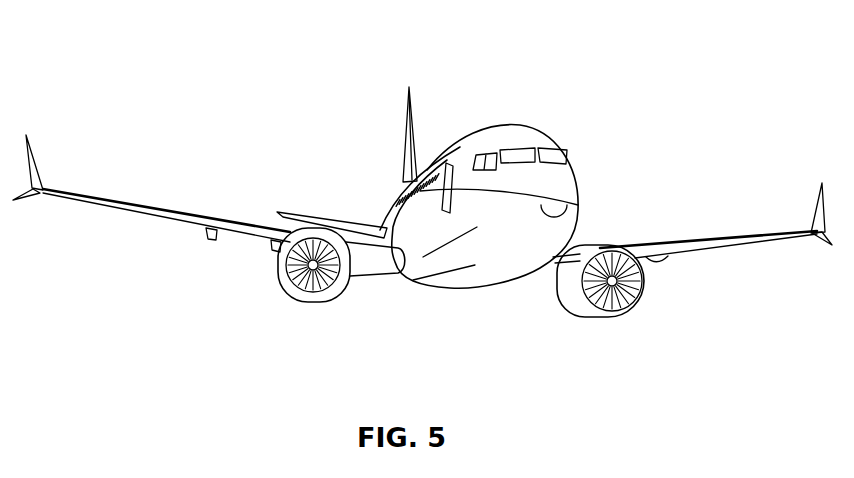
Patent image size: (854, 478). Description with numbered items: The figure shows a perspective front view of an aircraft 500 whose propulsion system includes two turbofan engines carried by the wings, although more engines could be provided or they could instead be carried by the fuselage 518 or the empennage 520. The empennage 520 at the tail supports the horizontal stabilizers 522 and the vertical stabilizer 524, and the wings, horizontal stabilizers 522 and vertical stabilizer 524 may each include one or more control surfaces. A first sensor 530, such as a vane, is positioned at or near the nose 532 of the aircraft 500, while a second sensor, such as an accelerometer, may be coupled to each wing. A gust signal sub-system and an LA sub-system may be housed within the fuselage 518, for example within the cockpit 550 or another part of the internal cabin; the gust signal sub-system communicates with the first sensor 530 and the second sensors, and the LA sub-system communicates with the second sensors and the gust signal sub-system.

The aircraft 500 is at (229, 49).
The fuselage 518 is at (583, 198).
The empennage 520 is at (403, 197).
The horizontal stabilizer 522 is at (310, 217).
The vertical stabilizer 524 is at (406, 117).
The first sensor 530 is at (557, 215).
The nose 532 is at (527, 215).
The cockpit 550 is at (563, 152).